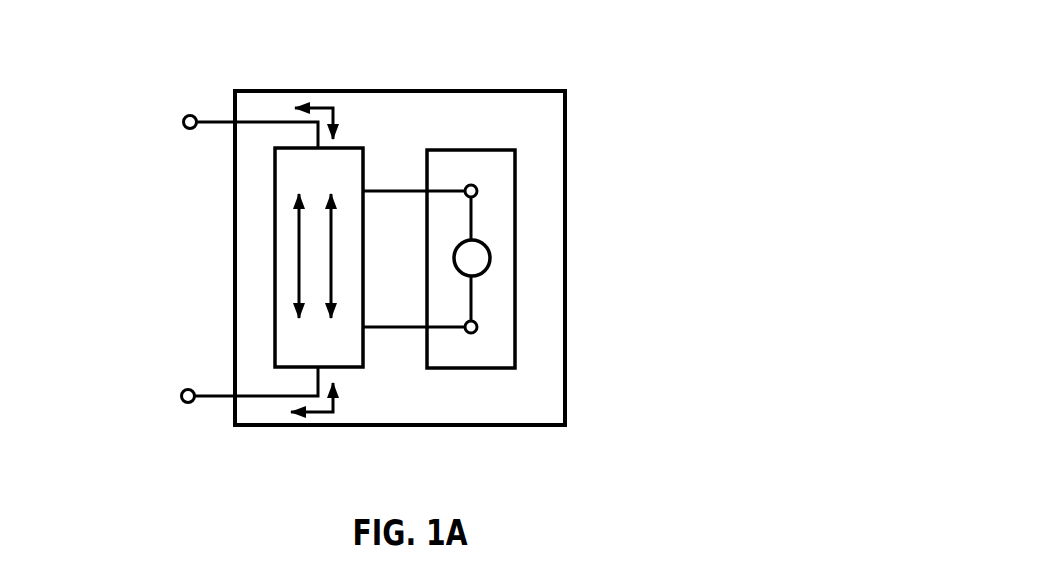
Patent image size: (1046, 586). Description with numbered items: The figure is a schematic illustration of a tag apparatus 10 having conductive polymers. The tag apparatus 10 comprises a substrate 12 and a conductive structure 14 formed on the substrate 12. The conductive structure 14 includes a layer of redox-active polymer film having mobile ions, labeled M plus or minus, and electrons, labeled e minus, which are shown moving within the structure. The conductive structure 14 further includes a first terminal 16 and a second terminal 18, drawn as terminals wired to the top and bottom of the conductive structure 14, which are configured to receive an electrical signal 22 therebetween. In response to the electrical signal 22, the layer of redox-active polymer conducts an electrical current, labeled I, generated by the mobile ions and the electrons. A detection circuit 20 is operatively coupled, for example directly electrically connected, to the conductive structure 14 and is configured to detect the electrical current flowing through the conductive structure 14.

The tag apparatus 10 is at (650, 39).
The substrate 12 is at (569, 189).
The conductive structure 14 is at (366, 164).
The first terminal 16 is at (181, 111).
The second terminal 18 is at (182, 403).
The detection circuit 20 is at (519, 317).
The electrical signal 22 is at (68, 197).